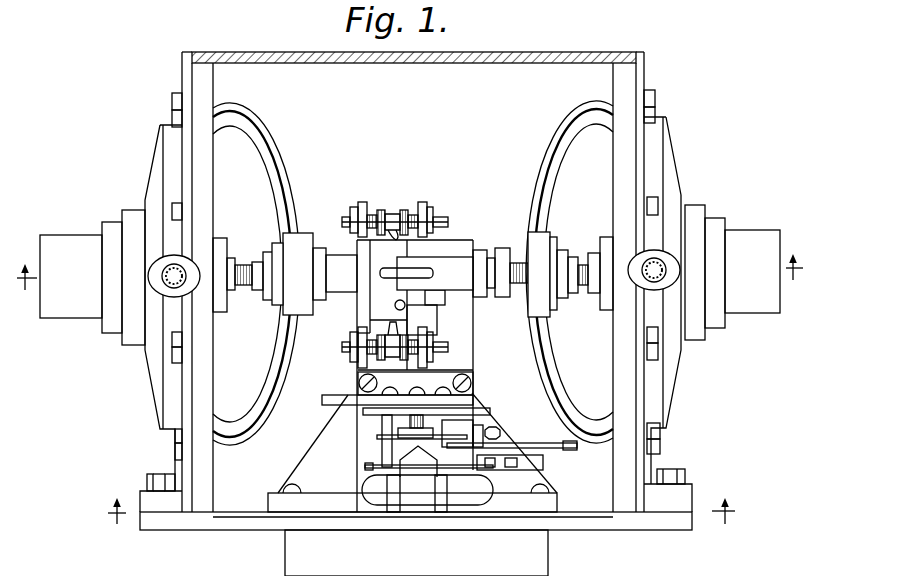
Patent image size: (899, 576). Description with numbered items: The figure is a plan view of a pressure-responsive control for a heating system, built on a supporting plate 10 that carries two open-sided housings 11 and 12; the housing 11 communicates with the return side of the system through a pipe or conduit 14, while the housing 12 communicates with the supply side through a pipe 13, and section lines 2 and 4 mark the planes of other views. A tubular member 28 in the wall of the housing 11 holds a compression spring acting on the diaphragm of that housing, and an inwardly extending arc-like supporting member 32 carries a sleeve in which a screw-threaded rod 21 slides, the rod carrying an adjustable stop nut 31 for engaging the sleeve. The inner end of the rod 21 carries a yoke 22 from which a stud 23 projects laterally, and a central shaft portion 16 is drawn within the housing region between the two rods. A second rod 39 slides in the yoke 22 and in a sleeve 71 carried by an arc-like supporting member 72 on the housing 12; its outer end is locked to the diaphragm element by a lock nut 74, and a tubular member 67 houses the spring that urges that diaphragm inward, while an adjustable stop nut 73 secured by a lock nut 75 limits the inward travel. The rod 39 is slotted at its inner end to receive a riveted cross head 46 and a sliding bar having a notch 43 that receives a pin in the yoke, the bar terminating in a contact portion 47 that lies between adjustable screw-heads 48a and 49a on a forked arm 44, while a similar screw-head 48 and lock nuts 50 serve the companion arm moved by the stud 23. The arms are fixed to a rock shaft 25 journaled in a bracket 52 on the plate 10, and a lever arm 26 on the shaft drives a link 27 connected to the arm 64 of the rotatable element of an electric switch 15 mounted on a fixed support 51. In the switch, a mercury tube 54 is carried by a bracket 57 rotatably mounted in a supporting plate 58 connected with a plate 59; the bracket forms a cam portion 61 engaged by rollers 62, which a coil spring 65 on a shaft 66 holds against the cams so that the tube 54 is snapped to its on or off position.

The section line 2- 2 is at (422, 513).
The section line 4- 4 is at (416, 283).
The supporting plate 10 is at (612, 523).
The housing 11 is at (665, 391).
The housing 12 is at (162, 381).
The pipe 13 is at (162, 277).
The pipe or conduit 14 is at (665, 270).
The electric switch 15 is at (380, 466).
The shaft 16 is at (432, 262).
The screw-threaded member or rod 21 is at (509, 243).
The yoke 22 is at (455, 291).
The projection or stud 23 is at (390, 326).
The rock shaft 25 is at (425, 317).
The lever arm 26 is at (556, 444).
The link 27 is at (500, 435).
The tubular member 28 is at (745, 240).
The adjustable stop nut 31 is at (566, 248).
The arc-like supporting member 32 is at (556, 174).
The member or rod 39 is at (243, 262).
The notch 43 is at (395, 305).
The forked arm 44 is at (424, 208).
The cross head 46 is at (440, 217).
The contact portion 47 is at (394, 213).
The adjustable screw-head 48 is at (345, 347).
The adjustable screw-head 48a is at (364, 206).
The adjustable screw-head 49a is at (405, 208).
The lock nuts 50 is at (440, 340).
The fixed support 51 is at (326, 400).
The bracket or support 52 is at (543, 463).
The mercury tube 54 is at (365, 487).
The bracket 57 is at (393, 505).
The supporting plate 58 is at (368, 464).
The plate 59 is at (365, 411).
The cam portion 61 is at (419, 472).
The rollers 62 is at (440, 470).
The arm 64 is at (380, 440).
The coil spring 65 is at (398, 422).
The shaft 66 is at (418, 415).
The tubular member 67 is at (66, 243).
The sleeve 71 is at (300, 236).
The arc-like supporting member 72 is at (278, 186).
The adjustable stop nut 73 is at (268, 303).
The lock nut 74 is at (222, 247).
The lock nut 75 is at (254, 294).